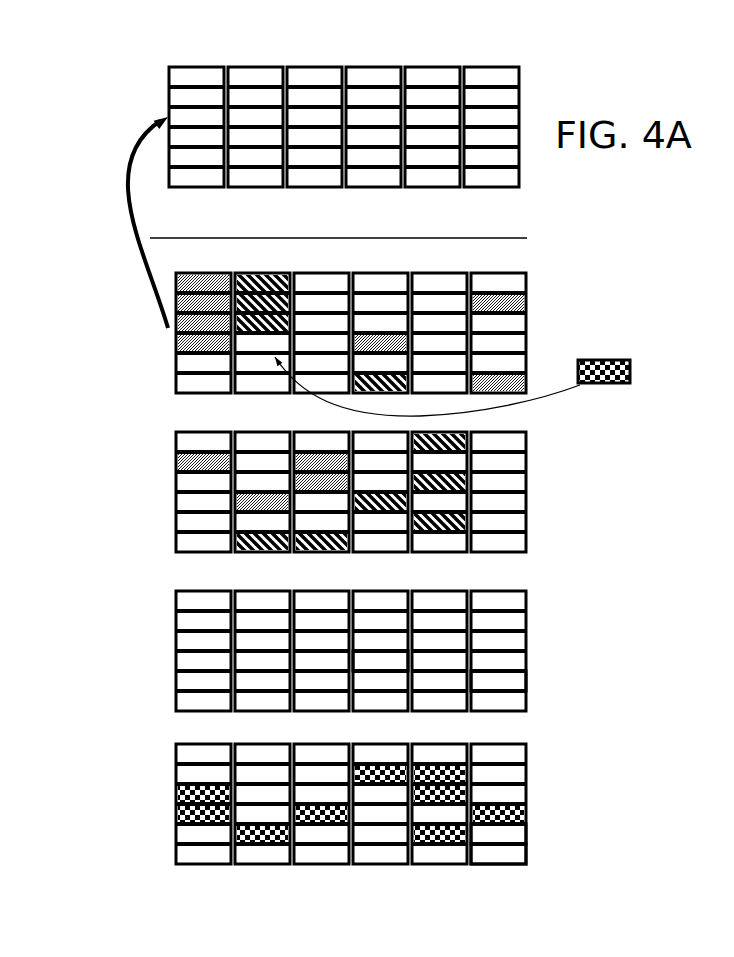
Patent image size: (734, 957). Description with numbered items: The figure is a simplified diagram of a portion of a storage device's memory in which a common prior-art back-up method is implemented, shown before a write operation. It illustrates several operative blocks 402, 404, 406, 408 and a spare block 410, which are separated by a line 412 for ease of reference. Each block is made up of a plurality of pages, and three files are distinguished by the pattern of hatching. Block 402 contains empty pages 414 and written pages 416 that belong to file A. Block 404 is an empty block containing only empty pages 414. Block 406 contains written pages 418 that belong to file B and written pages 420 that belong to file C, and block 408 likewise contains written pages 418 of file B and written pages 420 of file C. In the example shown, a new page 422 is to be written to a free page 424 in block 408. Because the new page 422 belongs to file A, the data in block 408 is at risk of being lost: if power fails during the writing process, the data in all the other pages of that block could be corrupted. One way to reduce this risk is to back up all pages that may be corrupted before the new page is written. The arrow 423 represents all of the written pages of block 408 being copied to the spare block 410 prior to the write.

The operative block 402 is at (528, 763).
The operative block 404 is at (528, 613).
The operative block 406 is at (528, 440).
The operative block 408 is at (532, 280).
The spare block 410 is at (528, 92).
The line 412 is at (527, 239).
The empty page 414 is at (383, 656).
The written page 416 is at (465, 770).
The written page 418 is at (253, 273).
The written page 420 is at (485, 380).
The new page 422 is at (607, 360).
The arrow 423 is at (133, 218).
The free page 424 is at (250, 366).